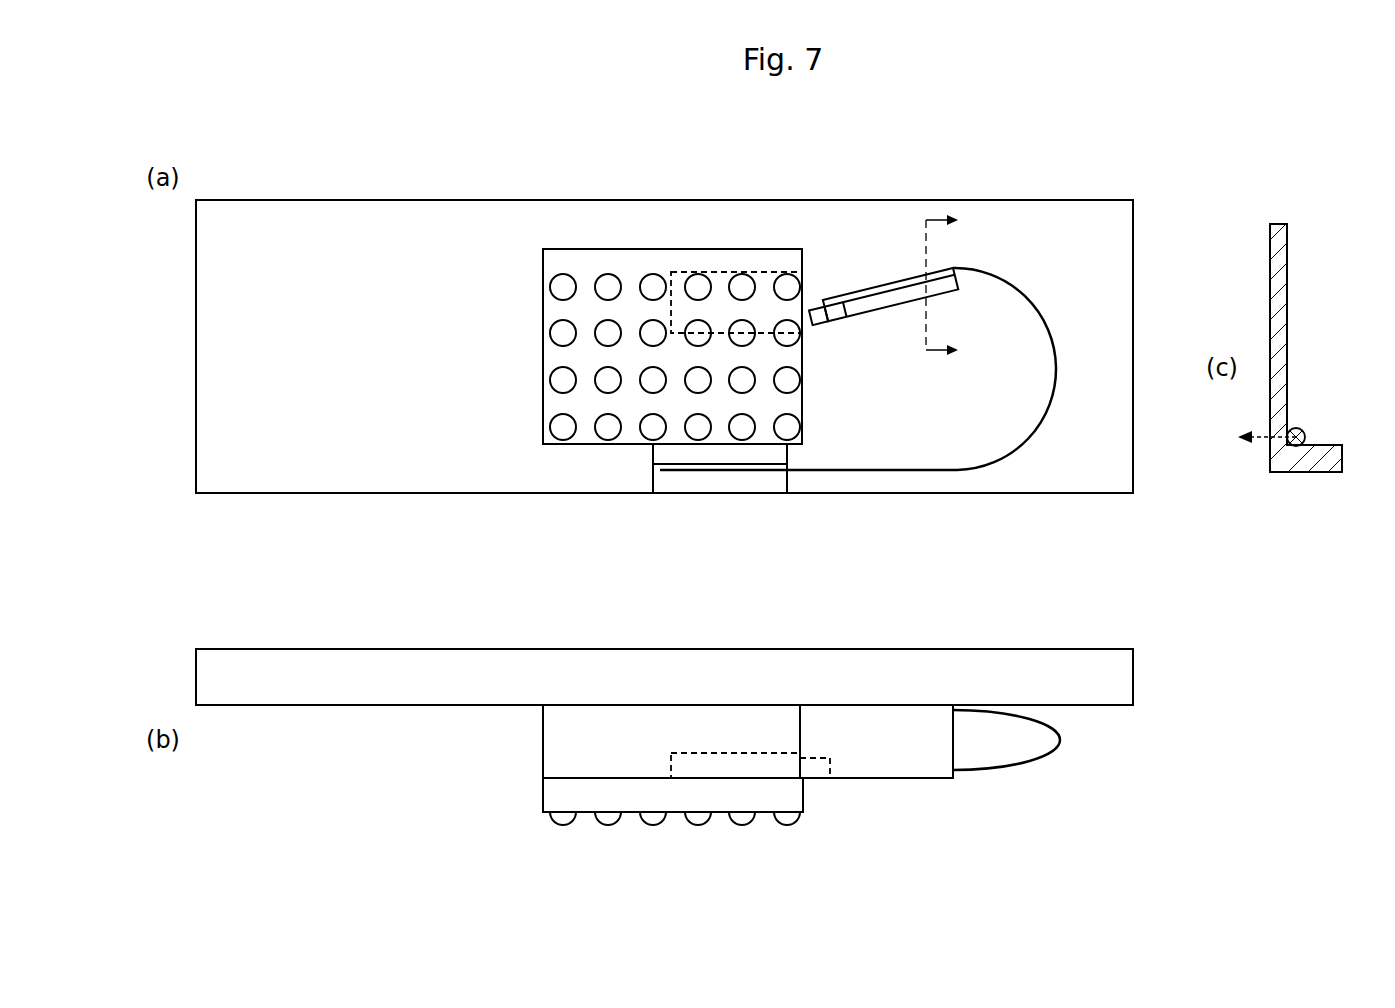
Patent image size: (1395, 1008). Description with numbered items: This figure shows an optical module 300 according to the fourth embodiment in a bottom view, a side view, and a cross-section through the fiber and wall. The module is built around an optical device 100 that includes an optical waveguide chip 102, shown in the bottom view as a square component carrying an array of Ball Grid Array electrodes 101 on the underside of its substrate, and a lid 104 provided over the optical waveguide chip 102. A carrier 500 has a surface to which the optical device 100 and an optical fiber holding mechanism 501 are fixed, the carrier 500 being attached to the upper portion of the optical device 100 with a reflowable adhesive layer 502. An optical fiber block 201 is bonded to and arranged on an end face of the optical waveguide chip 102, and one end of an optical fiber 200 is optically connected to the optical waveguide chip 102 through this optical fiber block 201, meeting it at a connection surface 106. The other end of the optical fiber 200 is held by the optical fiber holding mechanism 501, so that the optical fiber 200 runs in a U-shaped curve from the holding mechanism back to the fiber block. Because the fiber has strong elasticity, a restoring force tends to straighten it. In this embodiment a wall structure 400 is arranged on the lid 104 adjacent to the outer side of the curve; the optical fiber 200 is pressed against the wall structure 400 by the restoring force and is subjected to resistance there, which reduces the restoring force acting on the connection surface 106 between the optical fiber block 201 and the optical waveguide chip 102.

The optical module 300 is at (278, 151).
The carrier 500 is at (1112, 450).
The optical fiber holding mechanism 501 is at (720, 482).
The reflowable adhesive layer 502 is at (543, 708).
The optical device 100 is at (578, 446).
The Ball Grid Array electrodes 101 is at (563, 284).
The optical waveguide chip 102 is at (716, 270).
The lid 104 is at (553, 768).
The connection surface 106 is at (801, 765).
The optical fiber 200 is at (1013, 470).
The optical fiber block 201 is at (810, 306).
The wall structure 400 is at (866, 292).